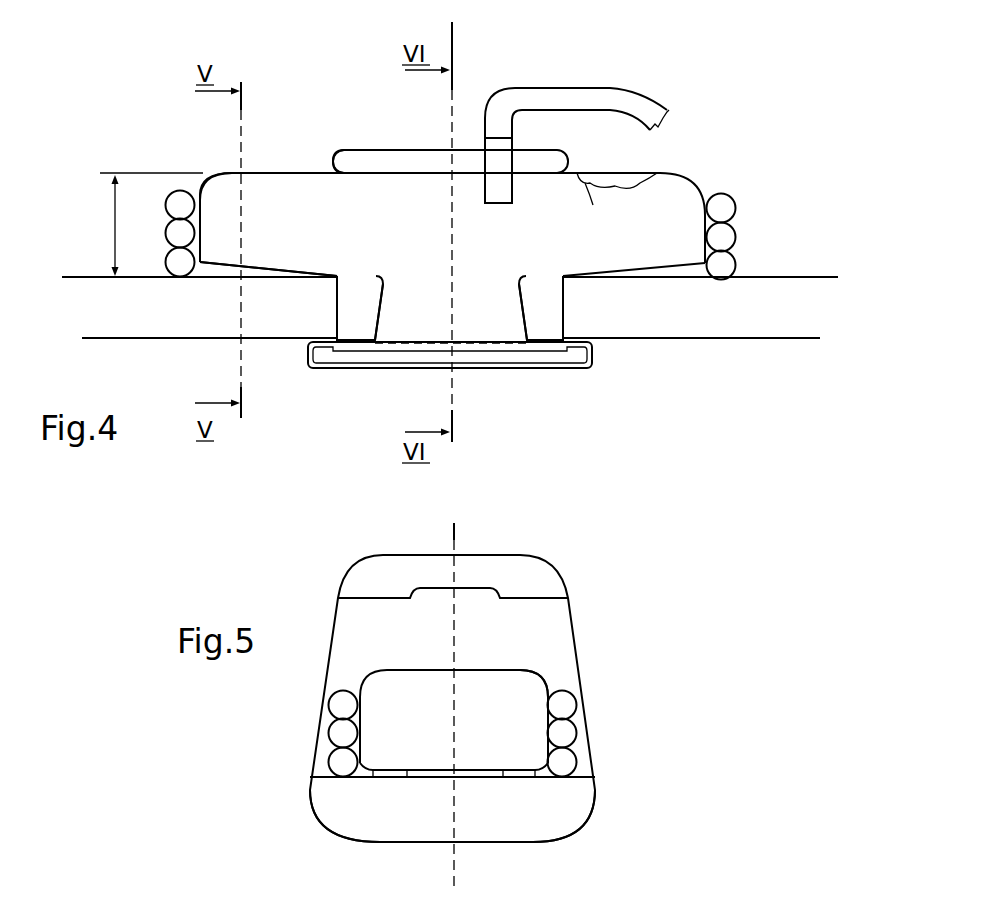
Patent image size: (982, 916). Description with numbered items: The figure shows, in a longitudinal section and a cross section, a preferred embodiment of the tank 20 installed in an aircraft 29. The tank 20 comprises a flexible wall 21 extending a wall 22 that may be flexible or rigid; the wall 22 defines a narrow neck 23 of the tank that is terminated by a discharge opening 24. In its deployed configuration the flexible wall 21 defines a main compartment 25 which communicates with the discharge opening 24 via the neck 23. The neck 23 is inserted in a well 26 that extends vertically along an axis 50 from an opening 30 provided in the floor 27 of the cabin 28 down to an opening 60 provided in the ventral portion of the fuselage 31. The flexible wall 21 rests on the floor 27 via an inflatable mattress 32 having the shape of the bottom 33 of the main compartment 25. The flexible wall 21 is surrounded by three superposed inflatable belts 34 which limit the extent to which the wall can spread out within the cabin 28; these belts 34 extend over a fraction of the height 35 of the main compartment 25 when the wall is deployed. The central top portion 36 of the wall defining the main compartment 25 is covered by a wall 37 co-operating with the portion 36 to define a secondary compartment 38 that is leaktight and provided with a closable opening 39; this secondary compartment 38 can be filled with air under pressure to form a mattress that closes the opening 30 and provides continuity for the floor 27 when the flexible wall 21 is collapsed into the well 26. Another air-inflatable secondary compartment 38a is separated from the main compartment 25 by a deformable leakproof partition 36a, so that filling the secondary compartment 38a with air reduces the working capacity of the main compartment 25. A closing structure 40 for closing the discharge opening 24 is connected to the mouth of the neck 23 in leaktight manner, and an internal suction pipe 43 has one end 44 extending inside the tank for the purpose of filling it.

In FIG. 4, the tank 20 is at (206, 186).
In FIG. 5, the tank 20 is at (542, 672).
In FIG. 4, the flexible wall 21 is at (200, 218).
In FIG. 5, the flexible wall 21 is at (393, 672).
In FIG. 4, the wall 22 is at (384, 314).
In FIG. 4, the neck 23 is at (469, 339).
In FIG. 4, the discharge opening 24 is at (417, 345).
In FIG. 4, the main compartment 25 is at (357, 244).
In FIG. 5, the main compartment 25 is at (469, 754).
In FIG. 4, the well 26 is at (352, 295).
In FIG. 4, the floor 27 is at (784, 277).
In FIG. 5, the floor 27 is at (582, 780).
In FIG. 4, the cabin 28 is at (512, 147).
In FIG. 5, the cabin 28 is at (469, 652).
In FIG. 5, the aircraft 29 is at (570, 580).
In FIG. 4, the opening 30 is at (555, 283).
In FIG. 4, the fuselage 31 is at (268, 340).
In FIG. 5, the fuselage 31 is at (423, 843).
In FIG. 4, the inflatable mattress 32 is at (212, 280).
In FIG. 5, the inflatable mattress 32 is at (422, 778).
In FIG. 4, the bottom 33 is at (286, 260).
In FIG. 5, the bottom 33 is at (508, 760).
In FIG. 4, the inflatable belts 34 is at (165, 196).
In FIG. 5, the inflatable belts 34 is at (328, 757).
In FIG. 4, the height 35 is at (112, 212).
In FIG. 4, the central top portion 36 is at (398, 176).
In FIG. 4, the deformable leakproof partition 36a is at (593, 205).
In FIG. 4, the wall 37 is at (378, 148).
In FIG. 4, the secondary compartment 38 is at (426, 150).
In FIG. 4, the secondary compartment 38a is at (615, 173).
In FIG. 4, the closable opening 39 is at (334, 160).
In FIG. 4, the closing structure 40 is at (495, 368).
In FIG. 4, the internal suction pipe 43 is at (592, 88).
In FIG. 4, the end of suction pipe 44 is at (495, 205).
In FIG. 4, the axis 50 is at (454, 36).
In FIG. 5, the axis 50 is at (456, 530).
In FIG. 4, the opening 60 is at (350, 332).